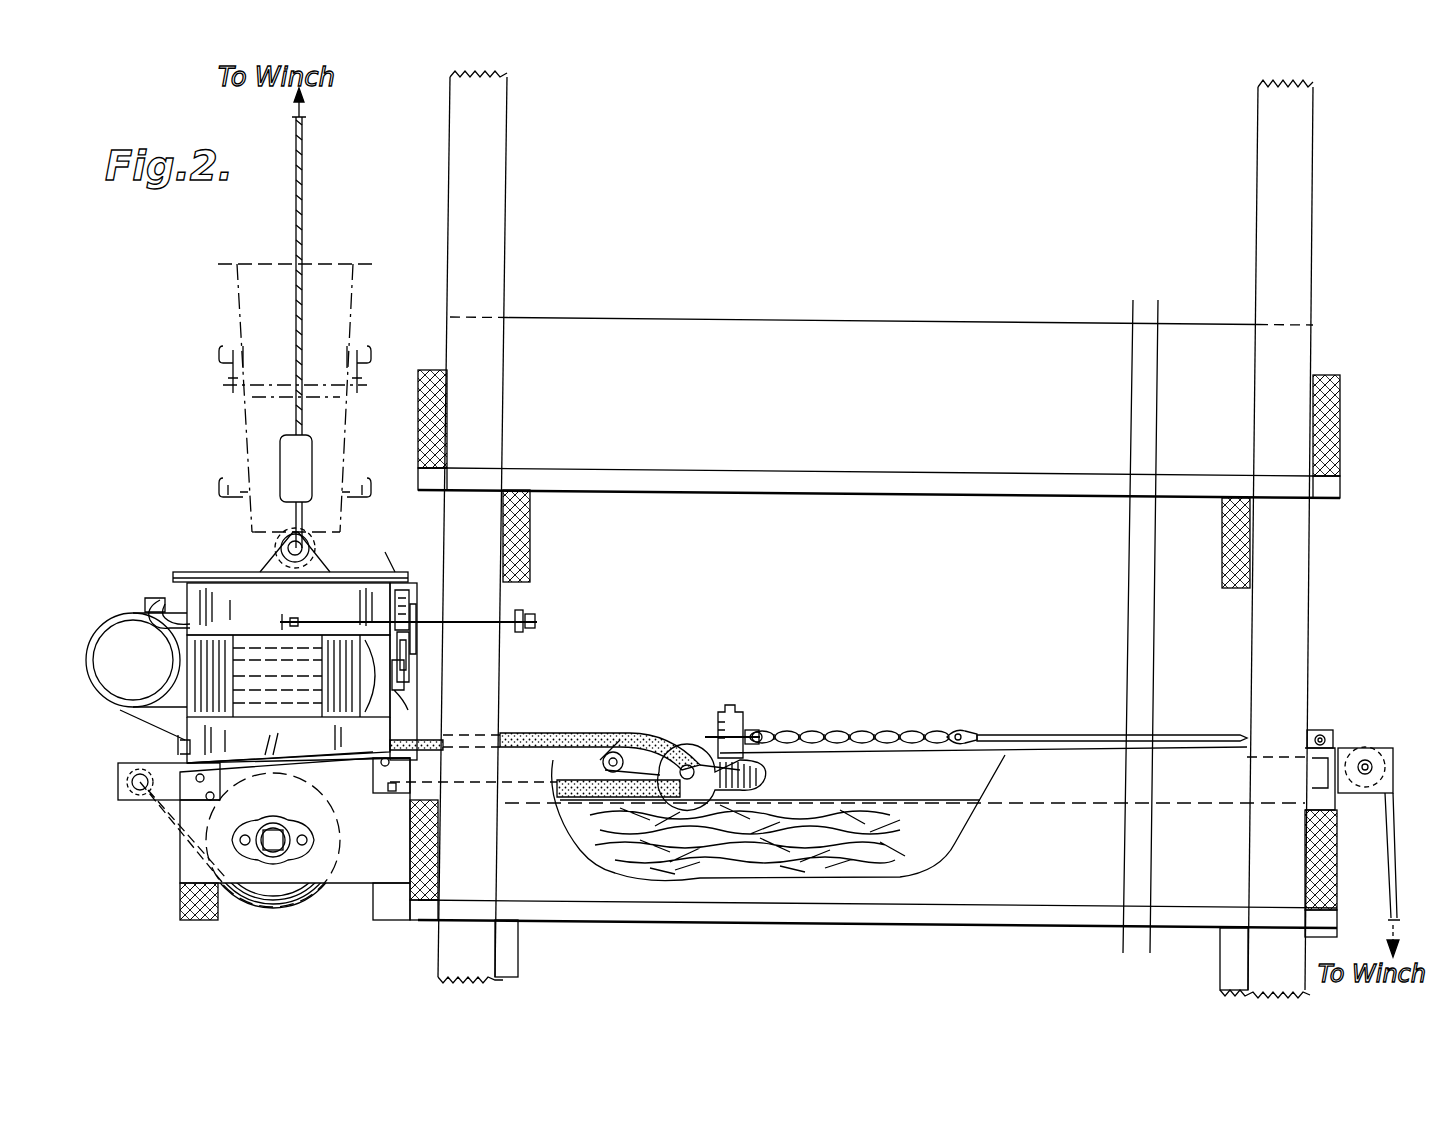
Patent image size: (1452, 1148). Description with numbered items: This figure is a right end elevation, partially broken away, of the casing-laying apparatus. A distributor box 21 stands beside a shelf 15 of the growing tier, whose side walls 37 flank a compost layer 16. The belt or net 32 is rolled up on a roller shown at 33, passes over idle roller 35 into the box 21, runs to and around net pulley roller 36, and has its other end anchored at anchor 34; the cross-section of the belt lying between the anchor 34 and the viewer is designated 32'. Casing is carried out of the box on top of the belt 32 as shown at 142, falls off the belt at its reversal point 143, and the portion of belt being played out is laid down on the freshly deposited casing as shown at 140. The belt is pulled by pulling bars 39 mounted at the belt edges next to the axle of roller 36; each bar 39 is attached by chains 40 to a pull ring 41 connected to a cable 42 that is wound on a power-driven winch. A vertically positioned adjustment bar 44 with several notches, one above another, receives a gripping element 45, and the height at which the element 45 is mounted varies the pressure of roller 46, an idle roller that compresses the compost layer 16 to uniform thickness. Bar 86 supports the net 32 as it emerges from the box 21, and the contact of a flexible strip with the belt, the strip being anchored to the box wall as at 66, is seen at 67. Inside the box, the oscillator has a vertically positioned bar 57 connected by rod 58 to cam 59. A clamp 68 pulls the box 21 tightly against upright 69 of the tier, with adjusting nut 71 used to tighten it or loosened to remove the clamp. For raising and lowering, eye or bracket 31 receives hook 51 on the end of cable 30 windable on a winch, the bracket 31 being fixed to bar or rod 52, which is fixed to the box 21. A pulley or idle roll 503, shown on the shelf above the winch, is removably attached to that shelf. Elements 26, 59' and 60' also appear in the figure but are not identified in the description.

The shelf 15 is at (768, 318).
The compost layer 16 is at (907, 825).
The distributor box 21 is at (176, 572).
The hopper 26 is at (350, 462).
The cable 30 is at (303, 210).
The eye or bracket 31 is at (318, 558).
The belt or net 32 is at (621, 730).
The belt cross-section 32' is at (535, 799).
The roller 33 is at (277, 905).
The anchor 34 is at (395, 795).
The idle roller 35 is at (140, 792).
The net pulley roller 36 is at (622, 735).
The side walls 37 is at (1050, 855).
The pulling bar 39 is at (688, 746).
The chains 40 is at (887, 732).
The pull ring 41 is at (953, 730).
The cable 42 is at (1075, 735).
The adjustment bar 44 is at (757, 730).
The gripping element 45 is at (787, 732).
The idle roller 46 is at (722, 712).
The hook 51 is at (285, 540).
The bar or rod 52 is at (403, 554).
The reciprocating bar 57 is at (400, 598).
The rod 58 is at (413, 630).
The cam 59 is at (438, 689).
The cylinder 59' is at (288, 676).
The base plate edge 60' is at (280, 774).
The strip anchor 66 is at (185, 725).
The strip contact 67 is at (178, 745).
The clamp 68 is at (487, 618).
The upright 69 is at (500, 642).
The adjusting nut 71 is at (540, 622).
The bar 86 is at (389, 765).
The deposited casing 140 is at (583, 810).
The casing on belt 142 is at (515, 733).
The reversal point 143 is at (655, 737).
The pulley or idle roll 503 is at (1368, 758).